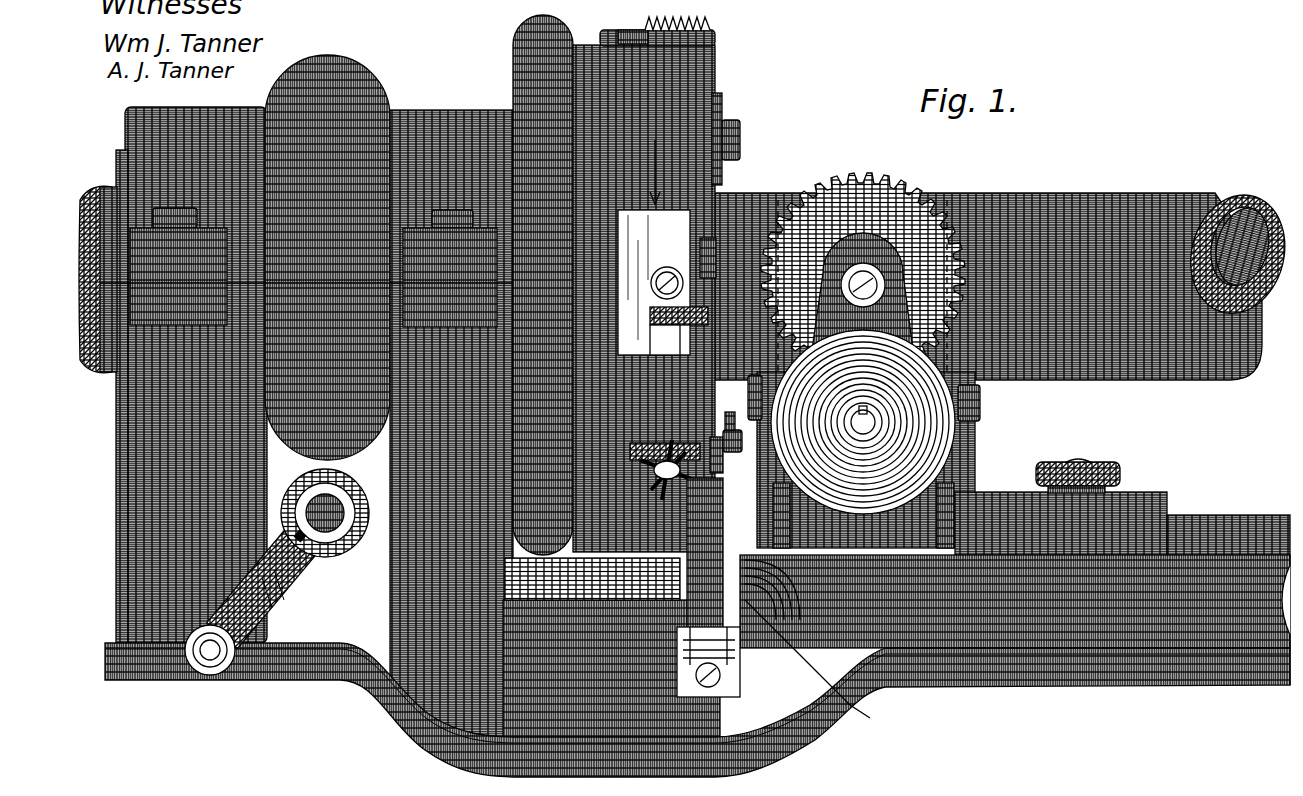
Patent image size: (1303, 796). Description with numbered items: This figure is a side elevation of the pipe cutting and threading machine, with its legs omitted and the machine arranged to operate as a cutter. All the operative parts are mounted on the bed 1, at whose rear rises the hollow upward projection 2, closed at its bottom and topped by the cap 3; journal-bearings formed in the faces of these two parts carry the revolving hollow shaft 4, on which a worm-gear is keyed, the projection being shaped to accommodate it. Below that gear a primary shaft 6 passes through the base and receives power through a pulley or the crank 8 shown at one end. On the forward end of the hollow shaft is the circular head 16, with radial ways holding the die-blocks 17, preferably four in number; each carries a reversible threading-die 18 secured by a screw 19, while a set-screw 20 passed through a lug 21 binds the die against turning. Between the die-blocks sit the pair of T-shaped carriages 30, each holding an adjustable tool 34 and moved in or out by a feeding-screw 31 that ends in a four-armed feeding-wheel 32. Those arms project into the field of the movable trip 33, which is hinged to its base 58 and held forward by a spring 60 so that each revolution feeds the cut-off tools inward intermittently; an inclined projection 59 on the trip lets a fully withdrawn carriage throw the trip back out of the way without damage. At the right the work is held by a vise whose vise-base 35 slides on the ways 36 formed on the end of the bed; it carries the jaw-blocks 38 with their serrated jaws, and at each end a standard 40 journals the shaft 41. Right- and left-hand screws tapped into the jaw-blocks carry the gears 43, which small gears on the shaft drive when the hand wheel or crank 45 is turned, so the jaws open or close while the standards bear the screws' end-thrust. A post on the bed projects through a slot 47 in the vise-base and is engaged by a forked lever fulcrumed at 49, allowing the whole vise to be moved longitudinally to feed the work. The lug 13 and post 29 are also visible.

The bed 1 is at (330, 675).
The hollow upward projection 2 is at (125, 505).
The cap 3 is at (422, 128).
The hollow shaft 4 is at (118, 152).
The primary shaft 6 is at (330, 500).
The crank 8 is at (291, 541).
The bearing lug 13 is at (716, 248).
The circular head 16 is at (714, 78).
The die-block 17 is at (630, 30).
The threading-die 18 is at (710, 30).
The screw 19 is at (740, 140).
The set-screw 20 is at (651, 283).
The lug 21 is at (650, 312).
The post 29 is at (514, 74).
The T-shaped carriage 30 is at (722, 112).
The feeding-screw 31 is at (657, 502).
The four-armed feeding-wheel 32 is at (640, 470).
The movable trip 33 is at (656, 553).
The adjustable tool 34 is at (732, 412).
The vise-base 35 is at (990, 510).
The ways 36 is at (1185, 528).
The jaw-block 38 is at (985, 398).
The standard 40 is at (880, 282).
The shaft 41 is at (870, 424).
The gear 43 is at (863, 275).
The hand wheel or crank 45 is at (952, 448).
The slot 47 is at (1043, 462).
The fulcrum 49 is at (1080, 462).
The base 58 is at (700, 680).
The inclined projection 59 is at (772, 588).
The spring 60 is at (816, 667).